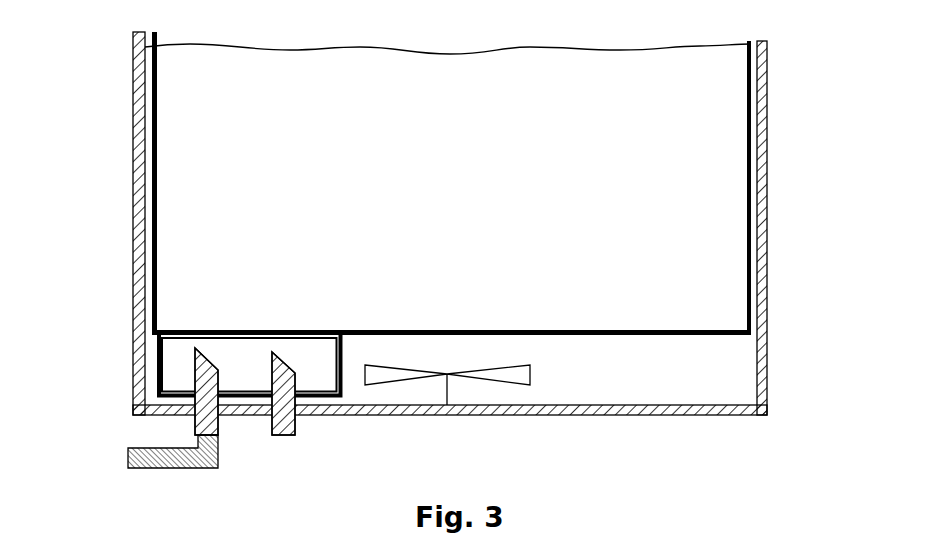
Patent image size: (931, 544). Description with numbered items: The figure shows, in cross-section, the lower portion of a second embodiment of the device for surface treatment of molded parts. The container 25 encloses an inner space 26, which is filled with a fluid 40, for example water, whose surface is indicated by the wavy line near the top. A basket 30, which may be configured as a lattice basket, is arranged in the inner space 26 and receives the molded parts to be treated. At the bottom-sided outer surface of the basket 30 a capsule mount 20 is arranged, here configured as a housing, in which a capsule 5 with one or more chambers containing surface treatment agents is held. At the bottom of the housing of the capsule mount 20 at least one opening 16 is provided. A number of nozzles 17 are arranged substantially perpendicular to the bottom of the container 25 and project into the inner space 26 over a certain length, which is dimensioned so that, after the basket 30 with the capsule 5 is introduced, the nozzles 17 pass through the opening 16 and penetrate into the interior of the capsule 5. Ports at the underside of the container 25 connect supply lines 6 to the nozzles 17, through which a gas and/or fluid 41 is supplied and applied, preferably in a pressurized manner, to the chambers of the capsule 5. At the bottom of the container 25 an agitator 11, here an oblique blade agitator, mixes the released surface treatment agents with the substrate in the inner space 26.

The basket 30 is at (147, 100).
The fluid 40 is at (557, 53).
The container 25 is at (762, 147).
The inner space 26 is at (708, 377).
The capsule 5 is at (311, 338).
The capsule mount 20 is at (348, 352).
The nozzles 17 is at (212, 353).
The opening 16 is at (223, 410).
The supply lines 6 is at (155, 445).
The gas and/or fluid 41 is at (133, 458).
The agitator 11 is at (508, 363).